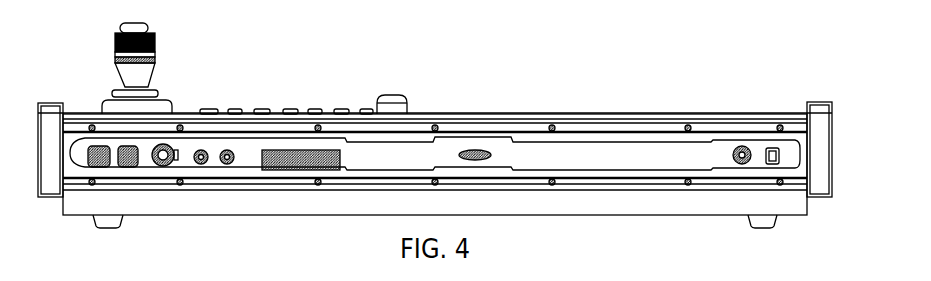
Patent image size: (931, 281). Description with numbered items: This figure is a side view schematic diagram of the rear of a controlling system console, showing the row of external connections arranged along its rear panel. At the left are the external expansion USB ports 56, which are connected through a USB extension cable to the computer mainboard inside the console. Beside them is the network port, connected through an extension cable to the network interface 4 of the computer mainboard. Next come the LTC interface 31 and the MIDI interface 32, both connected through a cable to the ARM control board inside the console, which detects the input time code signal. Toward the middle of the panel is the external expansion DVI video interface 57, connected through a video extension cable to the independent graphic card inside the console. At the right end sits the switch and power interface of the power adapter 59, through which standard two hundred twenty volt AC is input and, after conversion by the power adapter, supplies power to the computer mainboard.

The external expansion USB port 56 is at (131, 167).
The network interface 4 is at (166, 151).
The LTC interface 31 is at (202, 156).
The MIDI interface 32 is at (228, 157).
The external expansion DVI video interface 57 is at (472, 154).
The switch and power interface of the power adapter 59 is at (768, 148).